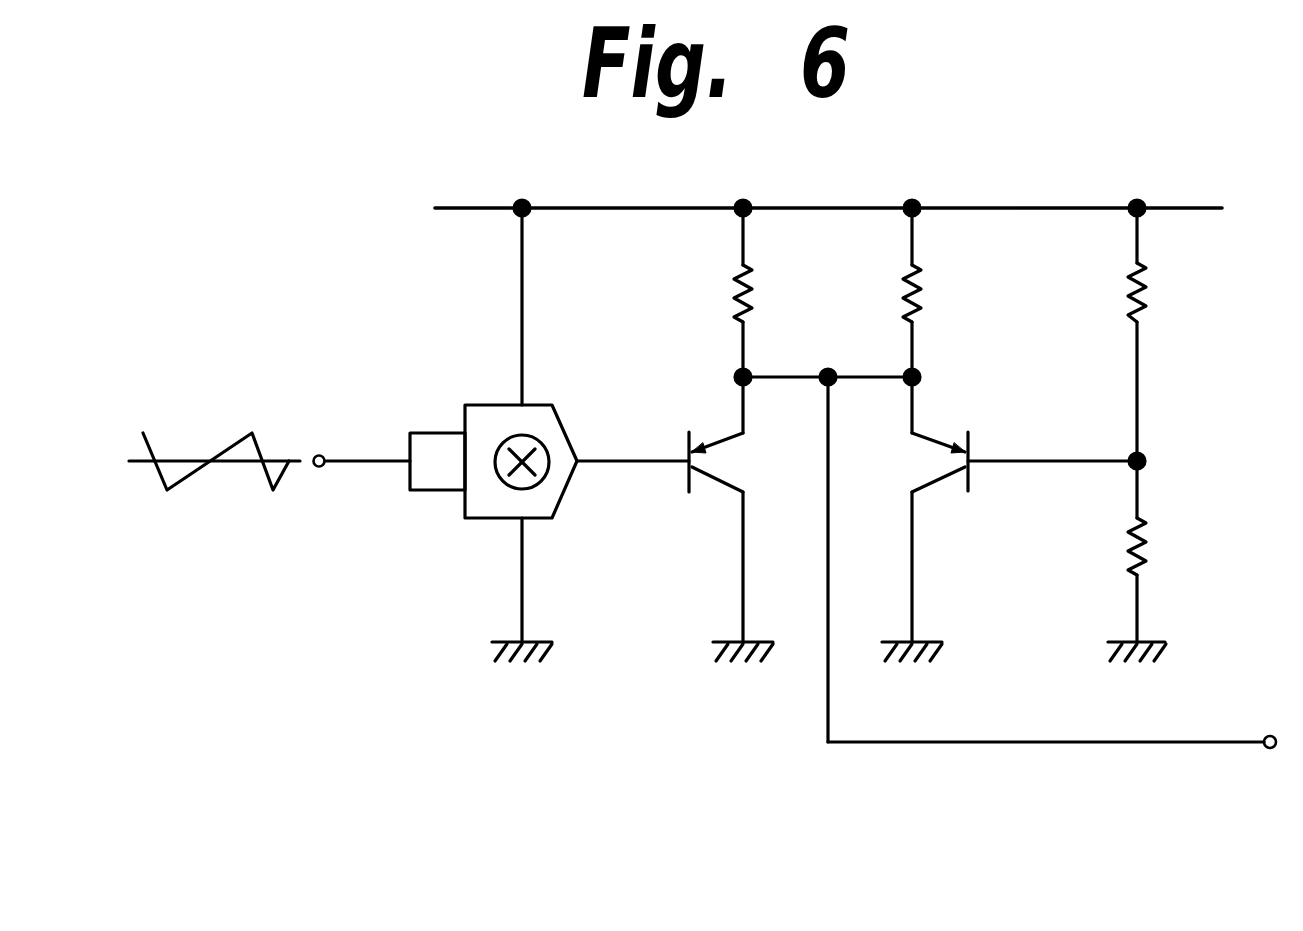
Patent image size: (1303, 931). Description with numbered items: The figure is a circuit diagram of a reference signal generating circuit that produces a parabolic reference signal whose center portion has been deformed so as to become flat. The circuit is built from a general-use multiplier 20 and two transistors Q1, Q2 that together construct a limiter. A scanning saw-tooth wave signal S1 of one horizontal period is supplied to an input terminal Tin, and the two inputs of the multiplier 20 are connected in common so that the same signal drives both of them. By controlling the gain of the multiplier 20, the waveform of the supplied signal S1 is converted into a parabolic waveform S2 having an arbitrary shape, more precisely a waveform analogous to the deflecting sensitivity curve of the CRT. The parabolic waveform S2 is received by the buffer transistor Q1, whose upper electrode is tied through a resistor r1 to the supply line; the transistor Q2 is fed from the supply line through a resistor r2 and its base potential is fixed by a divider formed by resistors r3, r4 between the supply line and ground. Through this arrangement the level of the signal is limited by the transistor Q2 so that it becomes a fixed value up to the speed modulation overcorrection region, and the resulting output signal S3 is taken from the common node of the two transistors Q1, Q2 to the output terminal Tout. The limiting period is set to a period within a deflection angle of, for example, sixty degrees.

The multiplier 20 is at (497, 403).
The scanning saw-tooth wave signal S1 is at (217, 447).
The parabolic waveform S2 is at (690, 378).
The output signal S3 is at (1110, 810).
The input terminal Tin is at (319, 468).
The output terminal Tout is at (1270, 749).
The resistor r1 is at (772, 292).
The resistor r2 is at (940, 292).
The resistor r3 is at (1165, 334).
The resistor r4 is at (1156, 561).
The buffer transistor Q1 is at (740, 519).
The transistor Q2 is at (1001, 519).